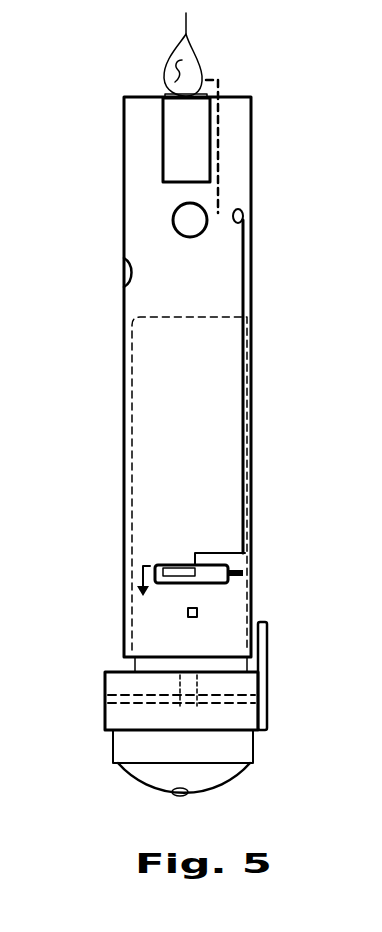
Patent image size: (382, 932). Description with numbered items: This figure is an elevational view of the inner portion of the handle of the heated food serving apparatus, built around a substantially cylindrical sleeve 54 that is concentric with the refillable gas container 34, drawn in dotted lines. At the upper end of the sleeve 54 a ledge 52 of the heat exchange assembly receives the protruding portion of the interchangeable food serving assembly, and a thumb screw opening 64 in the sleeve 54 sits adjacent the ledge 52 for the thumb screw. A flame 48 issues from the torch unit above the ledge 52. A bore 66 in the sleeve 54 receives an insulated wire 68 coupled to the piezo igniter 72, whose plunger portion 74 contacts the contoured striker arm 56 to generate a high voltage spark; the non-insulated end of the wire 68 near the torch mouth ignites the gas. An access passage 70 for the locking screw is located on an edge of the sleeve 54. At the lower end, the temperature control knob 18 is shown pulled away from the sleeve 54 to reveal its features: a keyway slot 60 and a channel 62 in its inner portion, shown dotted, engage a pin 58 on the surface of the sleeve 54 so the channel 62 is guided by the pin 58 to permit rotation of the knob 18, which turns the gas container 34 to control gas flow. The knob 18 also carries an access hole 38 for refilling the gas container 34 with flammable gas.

The temperature control knob 18 is at (253, 750).
The refillable gas container 34 is at (153, 413).
The access hole 38 is at (172, 792).
The flame 48 is at (200, 53).
The ledge 52 is at (190, 136).
The sleeve 54 is at (124, 534).
The contoured striker arm 56 is at (267, 655).
The pin 58 is at (197, 613).
The keyway slot 60 is at (180, 680).
The channel 62 is at (130, 698).
The thumb screw opening 64 is at (172, 221).
The bore 66 is at (243, 216).
The insulated wire 68 is at (245, 300).
The access passage 70 is at (124, 275).
The piezo igniter 72 is at (150, 566).
The plunger portion 74 is at (246, 572).